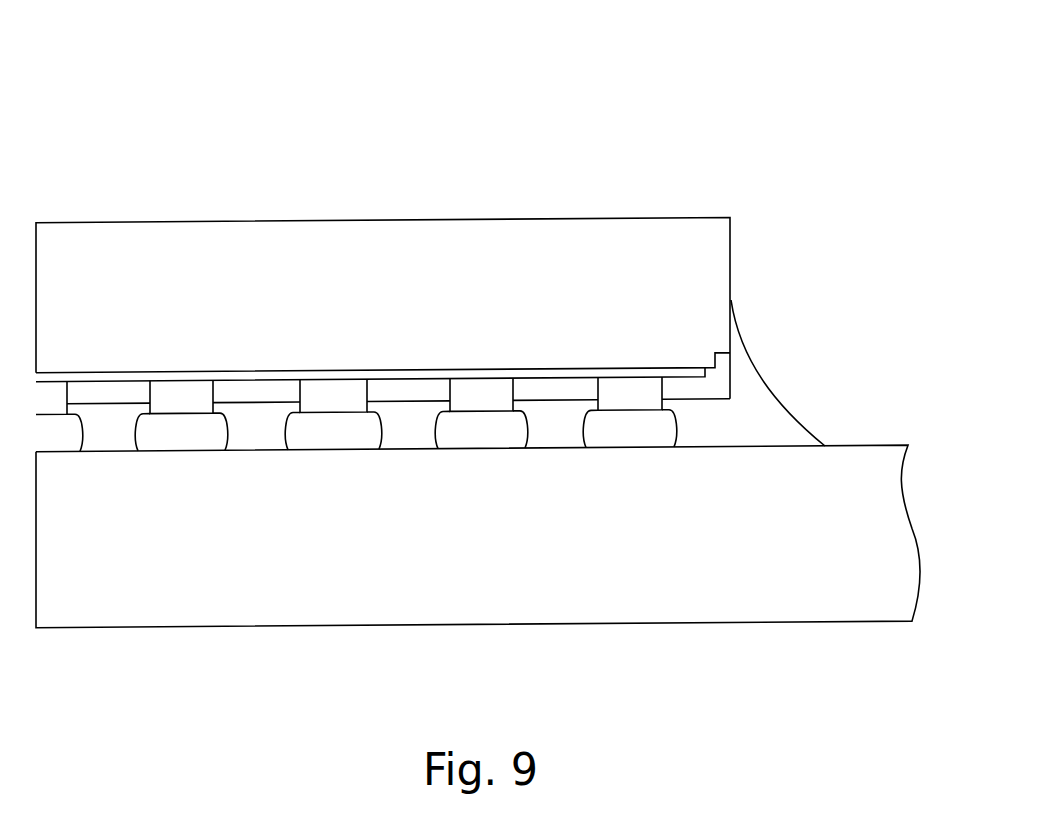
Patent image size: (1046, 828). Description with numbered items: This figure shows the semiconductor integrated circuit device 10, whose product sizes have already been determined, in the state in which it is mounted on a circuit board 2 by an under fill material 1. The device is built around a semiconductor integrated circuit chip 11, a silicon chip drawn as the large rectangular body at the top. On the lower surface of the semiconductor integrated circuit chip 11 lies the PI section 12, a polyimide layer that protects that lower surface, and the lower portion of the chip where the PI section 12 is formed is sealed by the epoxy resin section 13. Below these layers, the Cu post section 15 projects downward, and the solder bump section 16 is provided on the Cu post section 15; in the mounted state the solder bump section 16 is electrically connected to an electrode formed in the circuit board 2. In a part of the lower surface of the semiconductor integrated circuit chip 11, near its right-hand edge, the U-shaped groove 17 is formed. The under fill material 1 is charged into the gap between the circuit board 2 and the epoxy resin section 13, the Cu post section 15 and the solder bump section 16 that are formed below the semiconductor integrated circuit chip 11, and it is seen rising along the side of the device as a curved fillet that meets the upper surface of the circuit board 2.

The semiconductor integrated circuit device 10 is at (520, 113).
The semiconductor integrated circuit chip 11 is at (663, 241).
The PI section 12 is at (587, 373).
The epoxy resin section 13 is at (554, 388).
The Cu post section 15 is at (653, 392).
The solder bump section 16 is at (647, 437).
The U-shaped groove 17 is at (734, 388).
The under fill material 1 is at (787, 428).
The circuit board 2 is at (748, 610).